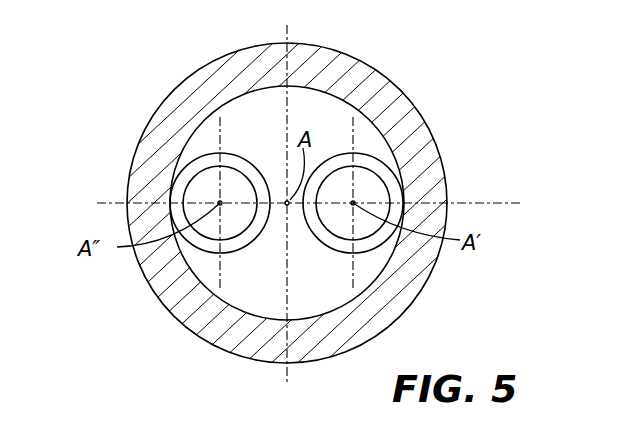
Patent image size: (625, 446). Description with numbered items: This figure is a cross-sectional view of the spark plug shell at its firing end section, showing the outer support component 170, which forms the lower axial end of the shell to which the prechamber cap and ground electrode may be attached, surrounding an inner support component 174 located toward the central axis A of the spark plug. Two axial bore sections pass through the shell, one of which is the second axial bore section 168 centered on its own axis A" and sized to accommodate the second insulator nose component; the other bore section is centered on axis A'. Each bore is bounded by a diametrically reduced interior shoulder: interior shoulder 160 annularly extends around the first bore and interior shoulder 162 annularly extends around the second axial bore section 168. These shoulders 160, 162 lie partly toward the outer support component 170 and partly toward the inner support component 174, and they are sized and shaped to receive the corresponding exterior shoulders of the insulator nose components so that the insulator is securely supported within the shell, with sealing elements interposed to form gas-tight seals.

The interior shoulder 160 is at (358, 175).
The interior shoulder 162 is at (199, 186).
The second axial bore section 168 is at (197, 248).
The outer support component 170 is at (445, 168).
The inner support component 174 is at (289, 210).